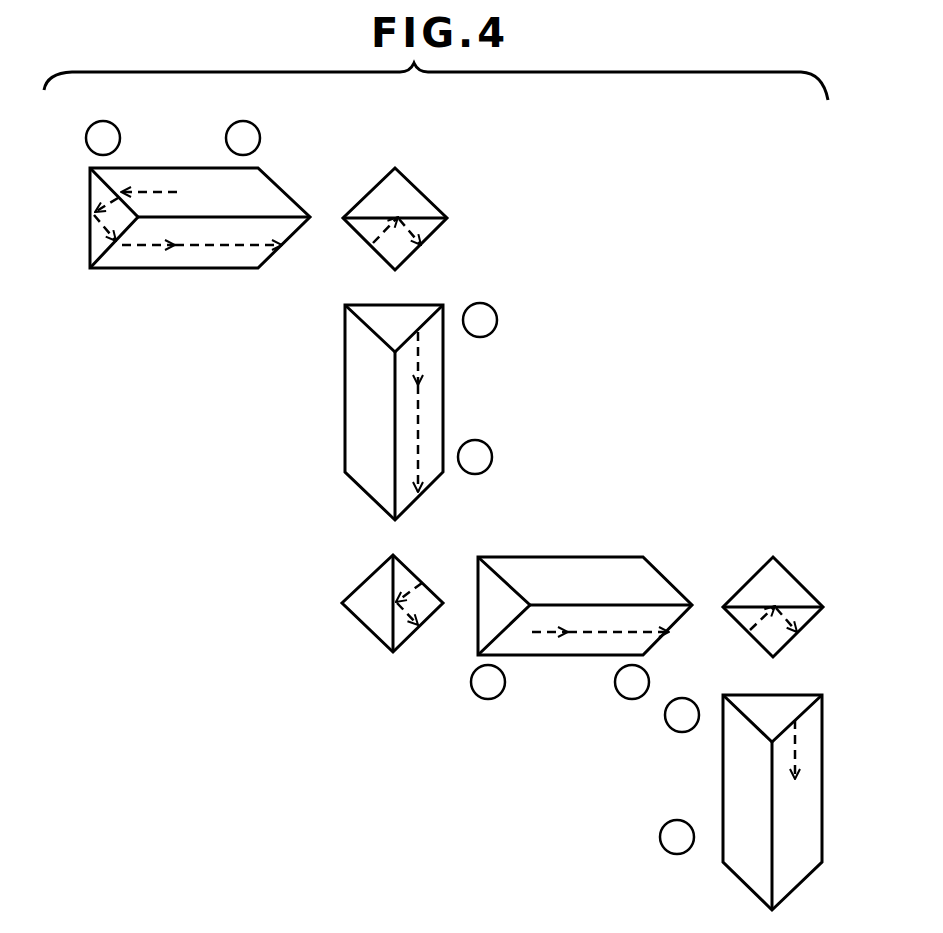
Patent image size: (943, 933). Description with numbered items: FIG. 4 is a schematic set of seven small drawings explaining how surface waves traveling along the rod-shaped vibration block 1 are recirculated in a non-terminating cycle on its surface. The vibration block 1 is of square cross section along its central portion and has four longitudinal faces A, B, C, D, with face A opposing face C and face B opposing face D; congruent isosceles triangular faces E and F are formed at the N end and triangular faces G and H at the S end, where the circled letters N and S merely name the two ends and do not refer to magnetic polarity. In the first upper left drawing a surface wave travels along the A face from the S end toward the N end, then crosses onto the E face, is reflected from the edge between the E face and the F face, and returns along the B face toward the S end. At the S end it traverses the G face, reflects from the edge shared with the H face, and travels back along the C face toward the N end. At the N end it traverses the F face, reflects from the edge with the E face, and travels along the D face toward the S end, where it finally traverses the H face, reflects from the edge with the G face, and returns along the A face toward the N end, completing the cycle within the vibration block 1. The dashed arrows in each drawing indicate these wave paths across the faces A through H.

The vibration block 1 is at (268, 200).
The A face A is at (471, 485).
The B face B is at (472, 407).
The C face C is at (575, 419).
The D face D is at (589, 485).
The E face E is at (456, 552).
The F face F is at (562, 702).
The G face G is at (533, 408).
The H face H is at (542, 446).
The N end N is at (390, 487).
The S end S is at (462, 426).